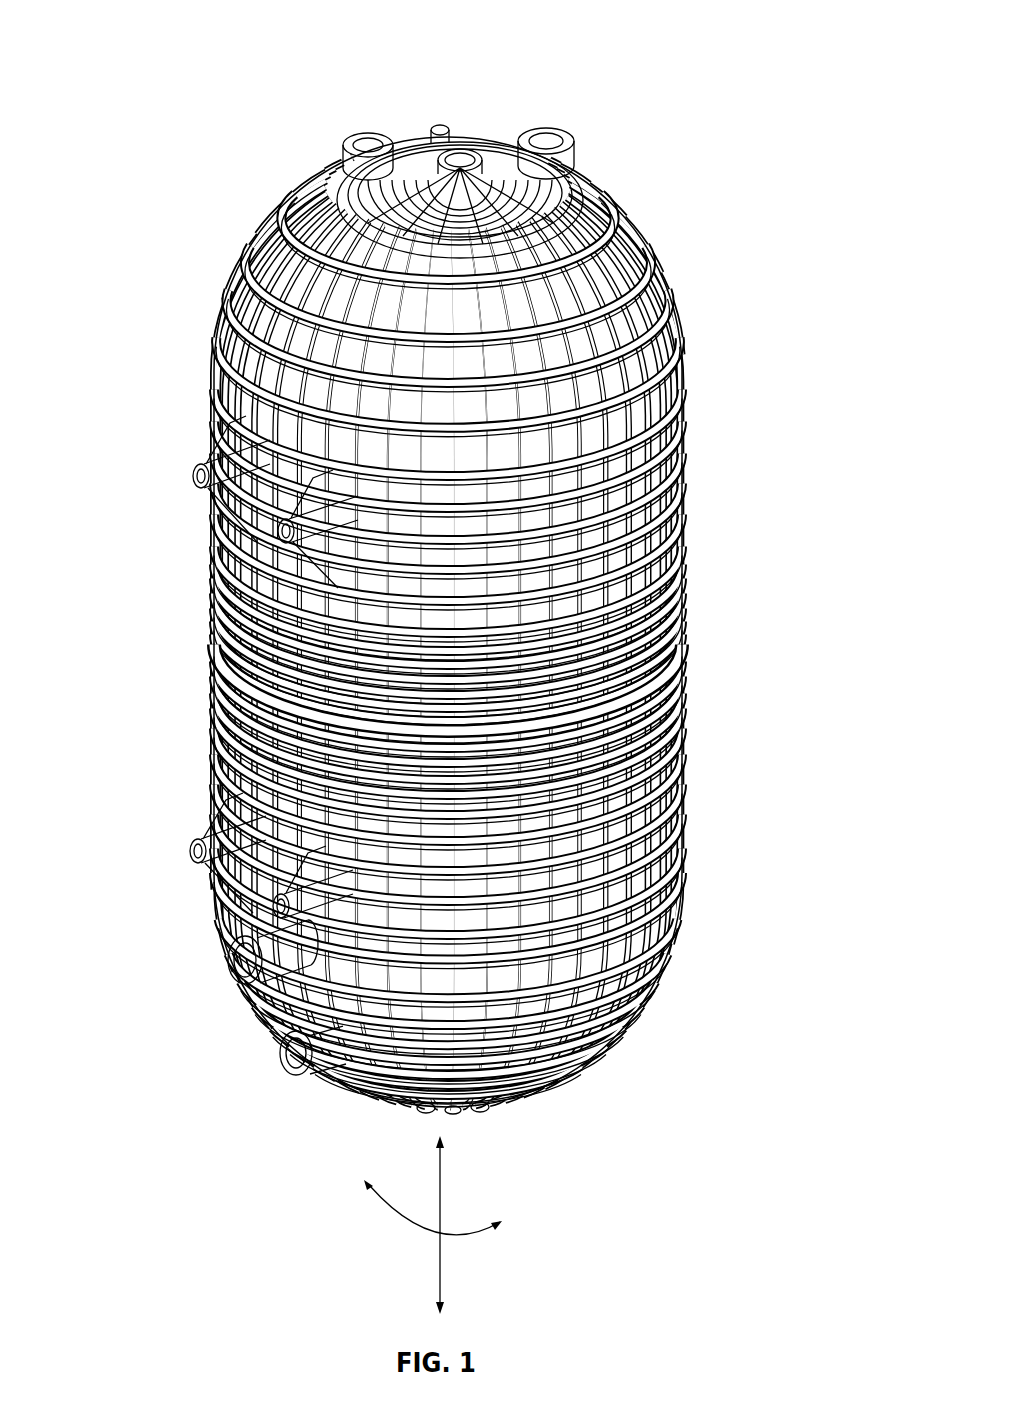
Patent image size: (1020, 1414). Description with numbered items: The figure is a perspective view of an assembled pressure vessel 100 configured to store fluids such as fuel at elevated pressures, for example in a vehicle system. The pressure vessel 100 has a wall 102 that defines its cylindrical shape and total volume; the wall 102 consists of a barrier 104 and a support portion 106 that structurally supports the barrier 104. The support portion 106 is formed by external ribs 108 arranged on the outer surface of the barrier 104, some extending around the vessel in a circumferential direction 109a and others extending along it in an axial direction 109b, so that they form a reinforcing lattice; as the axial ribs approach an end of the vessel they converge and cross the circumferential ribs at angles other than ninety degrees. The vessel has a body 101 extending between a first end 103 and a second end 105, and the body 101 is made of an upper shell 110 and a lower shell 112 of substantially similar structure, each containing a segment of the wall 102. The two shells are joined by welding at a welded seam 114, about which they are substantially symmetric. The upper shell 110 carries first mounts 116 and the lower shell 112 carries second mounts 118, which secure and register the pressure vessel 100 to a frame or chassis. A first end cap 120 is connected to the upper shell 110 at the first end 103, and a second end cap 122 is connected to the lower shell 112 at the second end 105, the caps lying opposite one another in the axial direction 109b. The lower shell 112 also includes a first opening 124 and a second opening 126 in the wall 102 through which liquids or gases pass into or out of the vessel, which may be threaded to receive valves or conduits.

The pressure vessel 100 is at (464, 661).
The body 101 is at (464, 615).
The wall 102 is at (805, 480).
The first end 103 is at (575, 193).
The barrier 104 is at (392, 350).
The second end 105 is at (575, 1080).
The support portion 106 is at (226, 282).
The external ribs 108 is at (222, 312).
The circumferential direction 109a is at (393, 1215).
The axial direction 109b is at (440, 1248).
The upper shell 110 is at (758, 268).
The lower shell 112 is at (760, 773).
The welded seam 114 is at (668, 670).
The first mounts 116 is at (270, 521).
The second mounts 118 is at (266, 897).
The first end cap 120 is at (586, 100).
The second end cap 122 is at (358, 1114).
The first opening 124 is at (221, 960).
The second opening 126 is at (273, 1051).